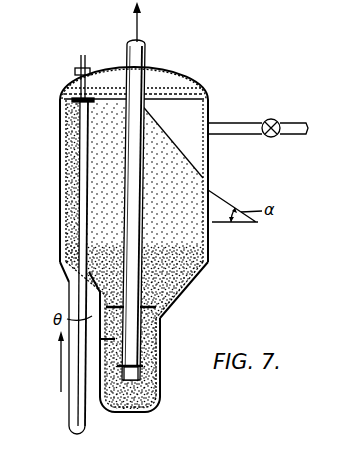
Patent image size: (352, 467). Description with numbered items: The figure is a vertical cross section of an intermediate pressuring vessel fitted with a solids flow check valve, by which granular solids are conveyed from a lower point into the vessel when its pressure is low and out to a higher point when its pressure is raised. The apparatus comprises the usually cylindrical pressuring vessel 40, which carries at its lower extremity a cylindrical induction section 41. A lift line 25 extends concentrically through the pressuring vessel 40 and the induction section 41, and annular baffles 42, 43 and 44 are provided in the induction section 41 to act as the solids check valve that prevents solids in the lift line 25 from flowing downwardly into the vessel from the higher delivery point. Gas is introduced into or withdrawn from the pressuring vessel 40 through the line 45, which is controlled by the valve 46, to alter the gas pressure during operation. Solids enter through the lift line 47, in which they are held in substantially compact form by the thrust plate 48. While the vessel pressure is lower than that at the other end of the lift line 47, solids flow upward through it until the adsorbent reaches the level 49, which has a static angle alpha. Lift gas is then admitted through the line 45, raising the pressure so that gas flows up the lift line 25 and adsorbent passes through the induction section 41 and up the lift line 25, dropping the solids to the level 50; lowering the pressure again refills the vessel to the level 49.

The lift line 25 is at (148, 71).
The pressuring vessel 40 is at (209, 189).
The induction section 41 is at (163, 384).
The annular baffle 42 is at (156, 307).
The annular baffle 43 is at (162, 348).
The annular baffle 44 is at (137, 411).
The line 45 is at (257, 118).
The valve 46 is at (270, 137).
The lift line 47 is at (73, 412).
The thrust plate 48 is at (92, 86).
The level 49 is at (166, 150).
The level 50 is at (202, 279).